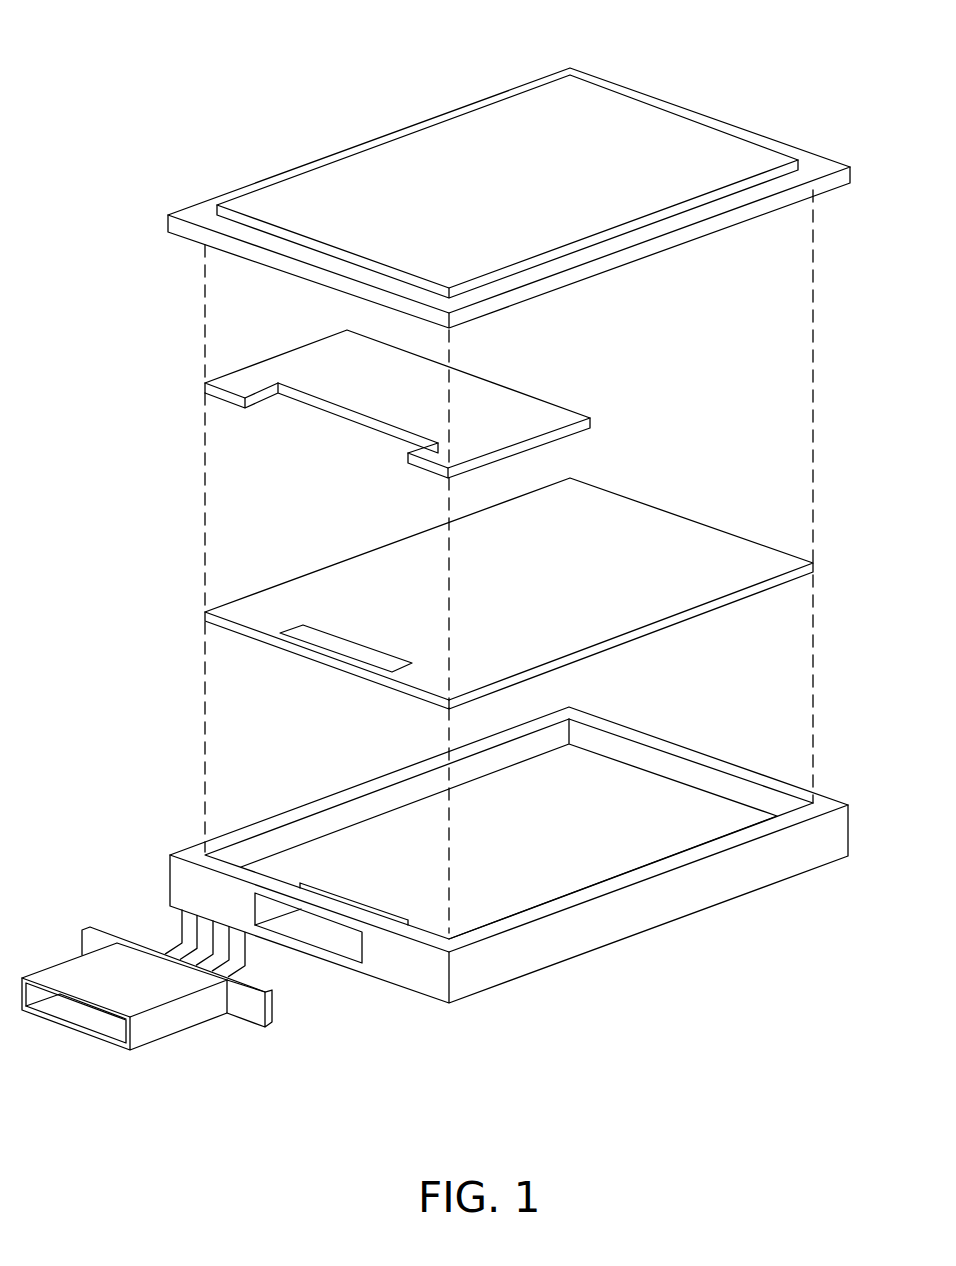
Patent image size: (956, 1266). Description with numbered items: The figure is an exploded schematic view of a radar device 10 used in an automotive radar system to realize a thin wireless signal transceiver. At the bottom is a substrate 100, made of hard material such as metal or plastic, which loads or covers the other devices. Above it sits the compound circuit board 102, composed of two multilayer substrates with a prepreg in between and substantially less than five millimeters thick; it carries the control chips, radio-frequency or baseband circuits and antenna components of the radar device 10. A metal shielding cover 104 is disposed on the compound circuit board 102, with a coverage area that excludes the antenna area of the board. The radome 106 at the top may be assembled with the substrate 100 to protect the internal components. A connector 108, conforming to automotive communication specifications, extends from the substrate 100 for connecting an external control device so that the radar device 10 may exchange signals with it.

The radar device 10 is at (236, 56).
The substrate 100 is at (686, 755).
The compound circuit board 102 is at (687, 530).
The metal shielding cover 104 is at (522, 402).
The radome 106 is at (707, 228).
The connector 108 is at (165, 1027).